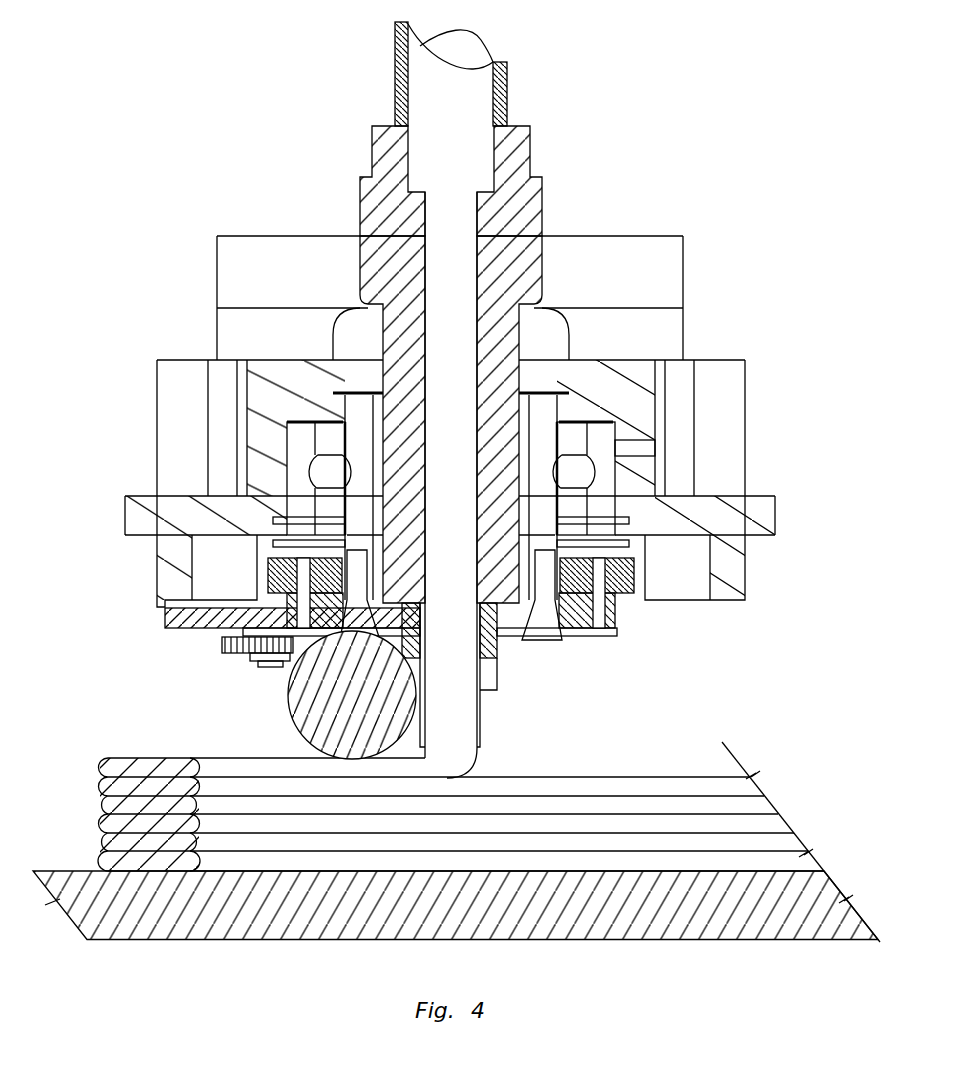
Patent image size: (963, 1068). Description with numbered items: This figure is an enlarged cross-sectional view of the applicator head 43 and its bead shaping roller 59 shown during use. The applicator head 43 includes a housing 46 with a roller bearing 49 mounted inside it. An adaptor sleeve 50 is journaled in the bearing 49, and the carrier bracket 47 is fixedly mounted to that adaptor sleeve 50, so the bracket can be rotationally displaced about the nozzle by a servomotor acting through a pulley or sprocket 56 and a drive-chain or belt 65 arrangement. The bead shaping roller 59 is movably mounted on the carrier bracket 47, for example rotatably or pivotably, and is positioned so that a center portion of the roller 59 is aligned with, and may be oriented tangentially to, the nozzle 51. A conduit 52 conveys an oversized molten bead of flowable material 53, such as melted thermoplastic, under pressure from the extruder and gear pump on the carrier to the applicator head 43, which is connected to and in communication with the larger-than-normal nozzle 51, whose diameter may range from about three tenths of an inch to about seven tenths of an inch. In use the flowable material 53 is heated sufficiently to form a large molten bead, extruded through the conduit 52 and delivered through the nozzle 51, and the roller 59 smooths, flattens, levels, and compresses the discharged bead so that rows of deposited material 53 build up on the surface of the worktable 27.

The worktable 27 is at (597, 941).
The applicator head 43 is at (772, 426).
The housing 46 is at (160, 421).
The carrier bracket 47 is at (160, 624).
The roller bearing 49 is at (602, 436).
The adaptor sleeve 50 is at (535, 503).
The nozzle 51 is at (372, 156).
The conduit 52 is at (397, 80).
The flowable material 53 is at (474, 36).
The pulley or sprocket 56 is at (623, 593).
The bead shaping roller 59 is at (290, 698).
The drive-chain or belt 65 is at (633, 568).